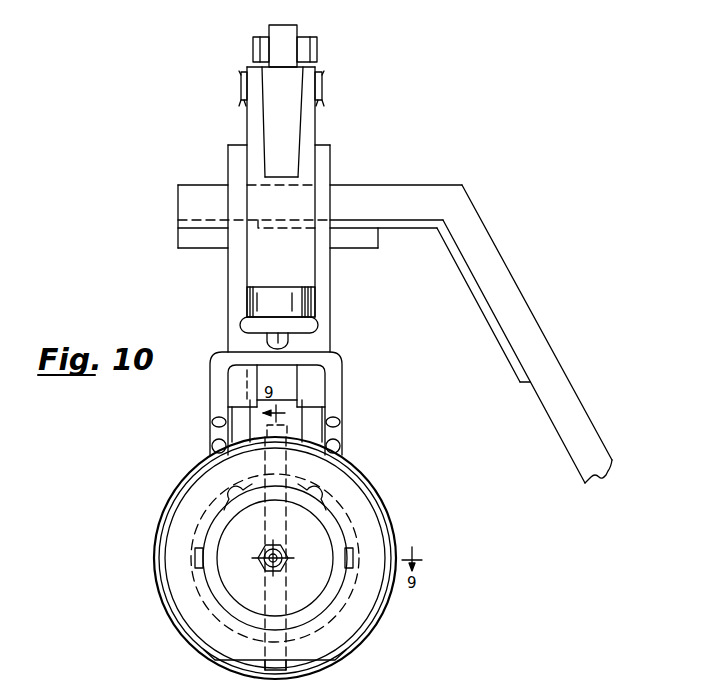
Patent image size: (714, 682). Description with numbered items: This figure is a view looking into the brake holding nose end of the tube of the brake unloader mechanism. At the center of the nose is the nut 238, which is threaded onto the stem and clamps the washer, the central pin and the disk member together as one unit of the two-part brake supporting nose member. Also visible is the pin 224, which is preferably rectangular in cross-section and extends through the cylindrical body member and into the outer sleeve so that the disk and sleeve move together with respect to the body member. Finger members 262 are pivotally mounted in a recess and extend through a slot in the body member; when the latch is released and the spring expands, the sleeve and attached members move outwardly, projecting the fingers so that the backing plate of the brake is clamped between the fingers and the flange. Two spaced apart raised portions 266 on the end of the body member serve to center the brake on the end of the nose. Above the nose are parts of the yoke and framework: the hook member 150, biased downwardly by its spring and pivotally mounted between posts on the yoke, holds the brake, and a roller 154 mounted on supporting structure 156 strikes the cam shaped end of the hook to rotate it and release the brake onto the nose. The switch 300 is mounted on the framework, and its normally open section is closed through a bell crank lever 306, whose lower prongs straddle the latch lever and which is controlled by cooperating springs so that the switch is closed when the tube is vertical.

The roller 154 is at (290, 45).
The hook member 150 is at (295, 125).
The supporting structure 156 is at (383, 192).
The switch 300 is at (293, 307).
The bell crank lever 306 is at (335, 383).
The raised portions 266 is at (230, 490).
The finger members 262 is at (353, 553).
The nut 238 is at (258, 558).
The pin 224 is at (267, 593).